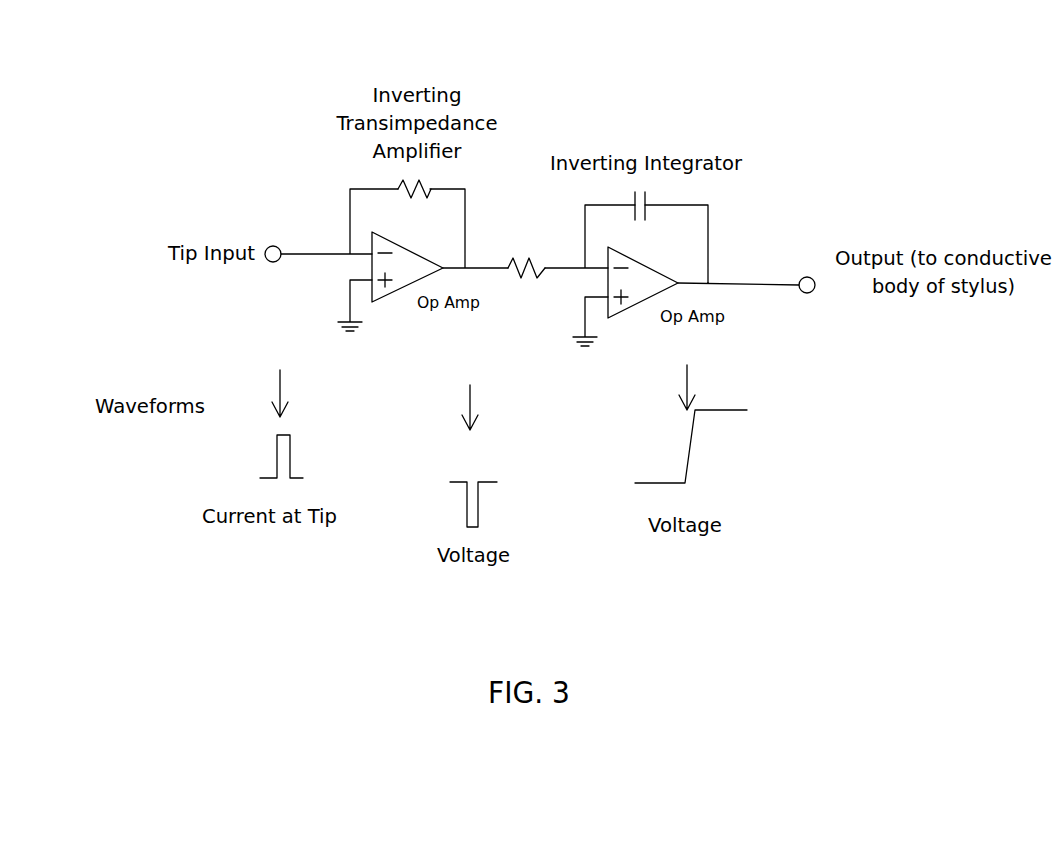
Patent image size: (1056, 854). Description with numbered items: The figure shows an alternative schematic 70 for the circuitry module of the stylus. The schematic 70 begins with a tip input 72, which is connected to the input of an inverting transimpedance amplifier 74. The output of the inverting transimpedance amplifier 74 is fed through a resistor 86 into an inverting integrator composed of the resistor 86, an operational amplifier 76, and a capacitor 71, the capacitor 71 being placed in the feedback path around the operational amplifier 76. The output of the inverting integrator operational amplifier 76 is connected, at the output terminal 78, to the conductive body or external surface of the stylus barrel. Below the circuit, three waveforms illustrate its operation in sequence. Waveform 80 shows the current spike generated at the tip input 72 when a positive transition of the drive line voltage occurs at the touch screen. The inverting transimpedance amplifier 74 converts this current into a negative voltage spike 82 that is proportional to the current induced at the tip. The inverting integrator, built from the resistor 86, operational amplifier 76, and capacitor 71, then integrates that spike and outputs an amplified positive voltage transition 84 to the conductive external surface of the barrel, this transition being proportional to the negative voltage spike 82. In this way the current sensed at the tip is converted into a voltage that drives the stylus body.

The alternative schematic 70 is at (712, 78).
The capacitor 71 is at (647, 200).
The tip input 72 is at (267, 242).
The inverting transimpedance amplifier 74 is at (385, 237).
The operational amplifier 76 is at (622, 253).
The output terminal 78 is at (807, 273).
The waveform 80 is at (295, 477).
The negative voltage spike 82 is at (488, 478).
The amplified positive voltage transition 84 is at (725, 412).
The resistor 86 is at (510, 288).